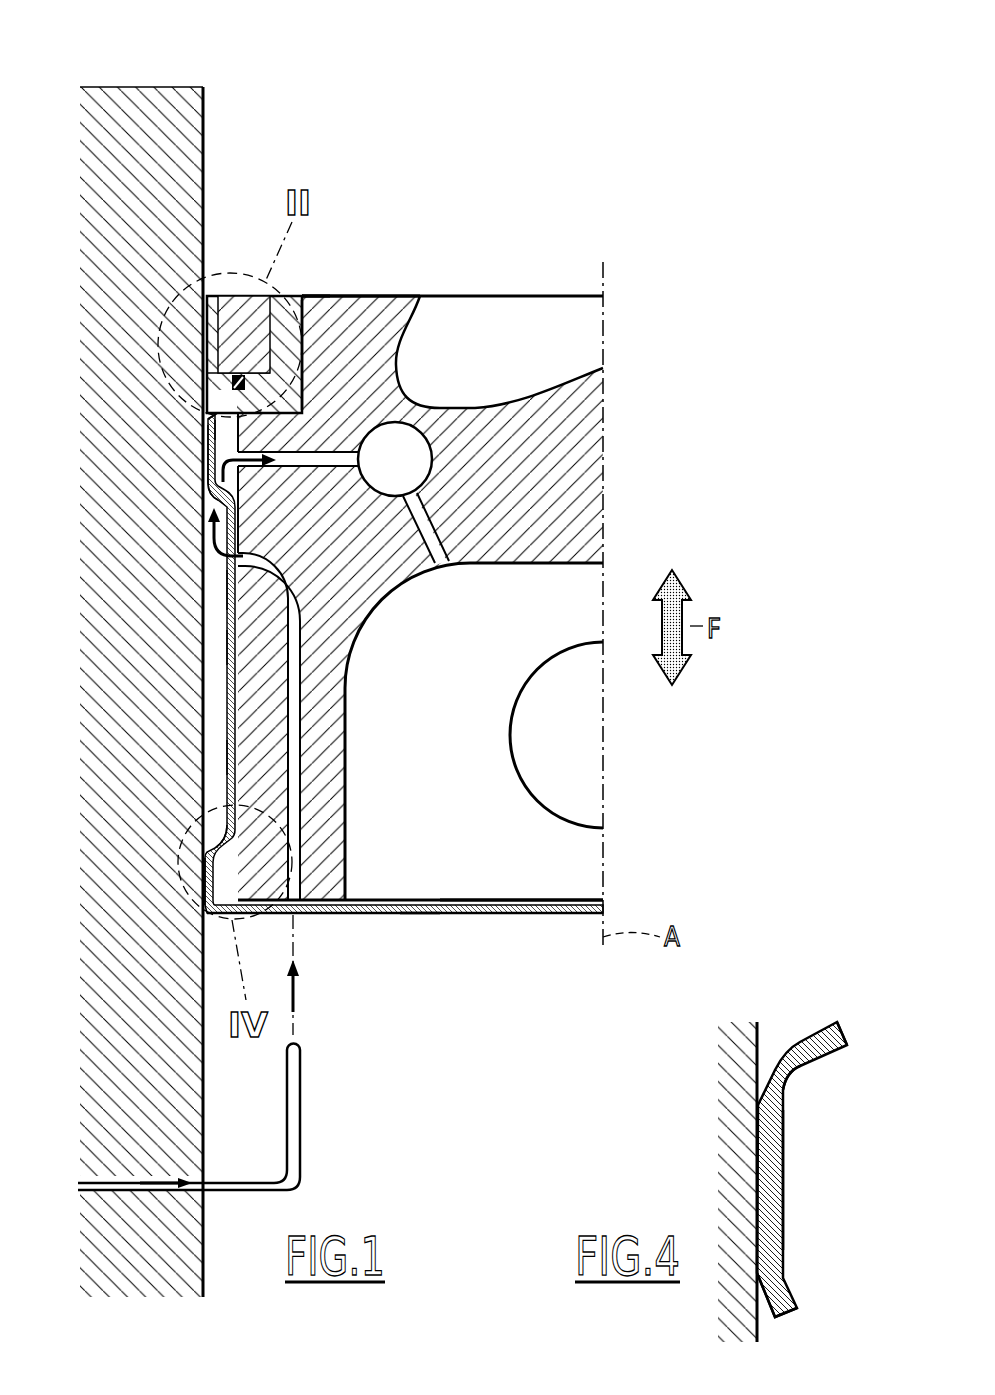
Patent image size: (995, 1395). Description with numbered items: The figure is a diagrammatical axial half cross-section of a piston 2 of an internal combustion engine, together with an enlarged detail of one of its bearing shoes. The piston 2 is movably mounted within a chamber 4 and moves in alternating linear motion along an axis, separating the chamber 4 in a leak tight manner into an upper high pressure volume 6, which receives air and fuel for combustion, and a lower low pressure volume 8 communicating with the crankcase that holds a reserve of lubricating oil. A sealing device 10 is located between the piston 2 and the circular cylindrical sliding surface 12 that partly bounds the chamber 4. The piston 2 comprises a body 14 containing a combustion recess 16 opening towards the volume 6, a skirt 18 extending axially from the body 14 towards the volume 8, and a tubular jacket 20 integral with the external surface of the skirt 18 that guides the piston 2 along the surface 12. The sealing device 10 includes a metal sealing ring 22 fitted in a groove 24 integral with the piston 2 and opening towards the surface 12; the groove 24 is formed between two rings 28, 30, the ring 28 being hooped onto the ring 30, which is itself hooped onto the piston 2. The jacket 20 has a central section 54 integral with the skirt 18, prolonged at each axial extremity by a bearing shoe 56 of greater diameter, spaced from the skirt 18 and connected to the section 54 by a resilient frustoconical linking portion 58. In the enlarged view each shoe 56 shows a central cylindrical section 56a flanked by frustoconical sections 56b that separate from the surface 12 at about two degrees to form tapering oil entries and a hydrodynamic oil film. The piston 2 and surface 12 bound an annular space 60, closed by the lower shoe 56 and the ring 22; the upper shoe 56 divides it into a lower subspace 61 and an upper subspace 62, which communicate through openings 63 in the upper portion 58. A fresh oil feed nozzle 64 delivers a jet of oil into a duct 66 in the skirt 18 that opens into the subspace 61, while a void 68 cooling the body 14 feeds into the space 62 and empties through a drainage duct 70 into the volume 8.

In FIG. 1, the piston 2 is at (440, 940).
In FIG. 1, the chamber 4 is at (280, 63).
In FIG. 1, the upper high pressure volume 6 is at (470, 193).
In FIG. 1, the lower low pressure volume 8 is at (382, 1015).
In FIG. 1, the sealing device 10 is at (303, 275).
In FIG. 1, the sliding surface 12 is at (207, 128).
In FIG. 4, the sliding surface 12 is at (757, 1060).
In FIG. 1, the body 14 is at (585, 475).
In FIG. 1, the combustion recess 16 is at (548, 355).
In FIG. 1, the skirt 18 is at (330, 795).
In FIG. 1, the tubular jacket 20 is at (214, 684).
In FIG. 1, the metal sealing ring 22 is at (230, 382).
In FIG. 1, the groove 24 is at (235, 340).
In FIG. 1, the ring 28 is at (243, 300).
In FIG. 1, the ring 30 is at (300, 318).
In FIG. 1, the central section 54 is at (230, 590).
In FIG. 1, the bearing shoe 56 is at (208, 470).
In FIG. 4, the bearing shoe 56 is at (785, 1215).
In FIG. 4, the central cylindrical section 56a is at (775, 1170).
In FIG. 4, the frustoconical section 56b is at (790, 1090).
In FIG. 1, the resilient frustoconical linking portion 58 is at (216, 548).
In FIG. 4, the resilient frustoconical linking portion 58 is at (822, 1042).
In FIG. 1, the annular space 60 is at (226, 648).
In FIG. 1, the lower subspace 61 is at (226, 757).
In FIG. 1, the upper subspace 62 is at (212, 435).
In FIG. 1, the openings 63 is at (213, 500).
In FIG. 1, the fresh oil feed nozzle 64 is at (301, 1130).
In FIG. 1, the duct 66 is at (301, 836).
In FIG. 1, the void 68 is at (409, 473).
In FIG. 1, the drainage duct 70 is at (434, 565).